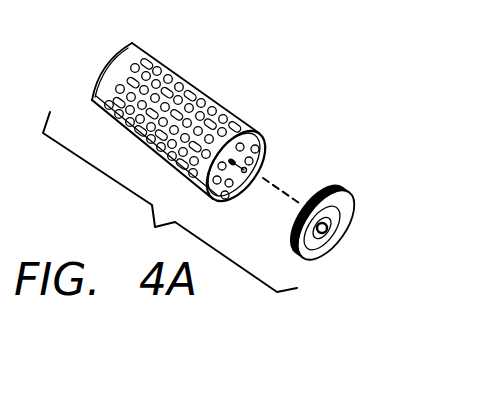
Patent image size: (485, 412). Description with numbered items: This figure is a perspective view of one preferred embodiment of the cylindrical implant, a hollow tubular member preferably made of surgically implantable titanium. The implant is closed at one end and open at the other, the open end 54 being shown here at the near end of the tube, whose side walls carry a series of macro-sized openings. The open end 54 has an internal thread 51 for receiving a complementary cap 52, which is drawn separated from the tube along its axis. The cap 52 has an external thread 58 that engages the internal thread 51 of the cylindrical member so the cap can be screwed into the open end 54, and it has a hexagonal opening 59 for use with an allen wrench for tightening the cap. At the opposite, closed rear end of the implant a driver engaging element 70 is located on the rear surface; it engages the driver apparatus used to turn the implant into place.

The driver engaging element 70 is at (124, 42).
The internal thread 51 is at (276, 168).
The open end 54 is at (273, 158).
The cap 52 is at (356, 214).
The external thread 58 is at (318, 184).
The hexagonal opening 59 is at (328, 236).